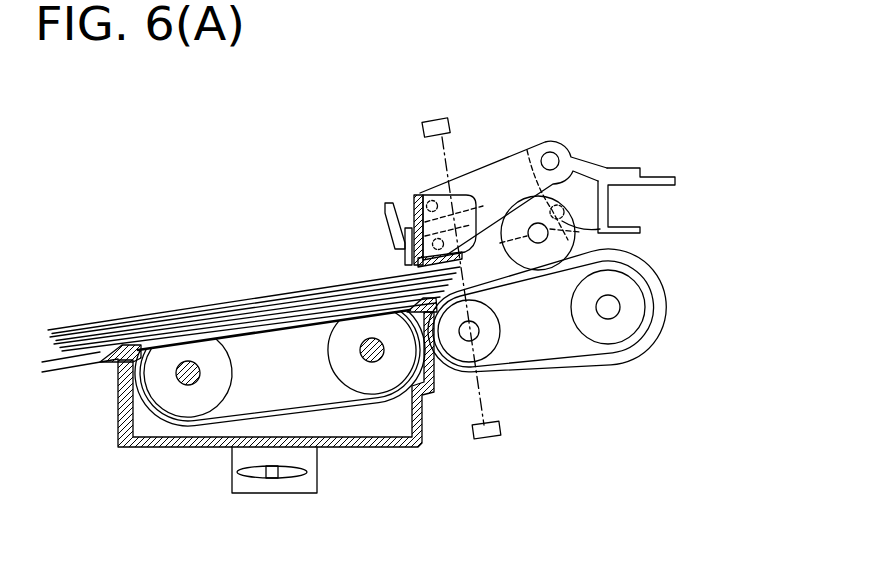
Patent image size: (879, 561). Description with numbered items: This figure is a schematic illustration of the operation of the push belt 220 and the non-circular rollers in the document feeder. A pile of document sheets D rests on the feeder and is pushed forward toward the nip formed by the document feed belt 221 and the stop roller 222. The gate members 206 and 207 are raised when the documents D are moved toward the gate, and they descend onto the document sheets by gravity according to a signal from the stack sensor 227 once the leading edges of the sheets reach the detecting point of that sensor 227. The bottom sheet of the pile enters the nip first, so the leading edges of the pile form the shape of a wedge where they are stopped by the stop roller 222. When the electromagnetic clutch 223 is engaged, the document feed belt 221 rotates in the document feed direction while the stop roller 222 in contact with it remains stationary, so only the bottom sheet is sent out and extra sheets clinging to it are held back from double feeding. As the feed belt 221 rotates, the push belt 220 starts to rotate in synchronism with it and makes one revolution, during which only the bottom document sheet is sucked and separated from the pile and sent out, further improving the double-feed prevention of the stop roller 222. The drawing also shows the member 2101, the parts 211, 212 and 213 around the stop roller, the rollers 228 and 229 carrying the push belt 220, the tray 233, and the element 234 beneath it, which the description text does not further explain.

The document sheets D is at (213, 306).
The gate member 206 is at (413, 197).
The gate member 207 is at (404, 256).
The guide member 2101 is at (385, 206).
The pivot pin 211 is at (553, 152).
The lever 212 is at (479, 169).
The arm 213 is at (490, 218).
The push belt 220 is at (340, 388).
The document feed belt 221 is at (532, 290).
The stop roller 222 is at (580, 238).
The electromagnetic clutch 223 is at (660, 300).
The stack sensor 227 is at (440, 118).
The drive roller 228 is at (387, 373).
The roller 229 is at (172, 402).
The tray 233 is at (122, 418).
The lamp 234 is at (232, 470).